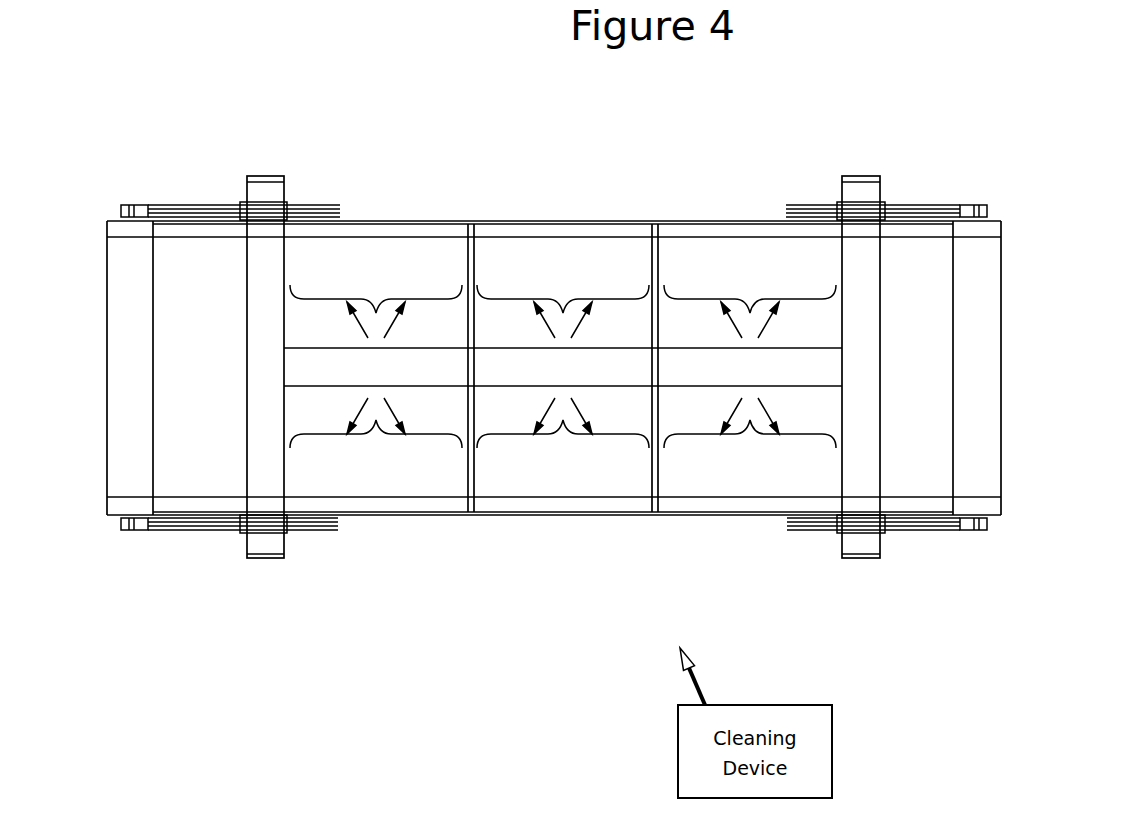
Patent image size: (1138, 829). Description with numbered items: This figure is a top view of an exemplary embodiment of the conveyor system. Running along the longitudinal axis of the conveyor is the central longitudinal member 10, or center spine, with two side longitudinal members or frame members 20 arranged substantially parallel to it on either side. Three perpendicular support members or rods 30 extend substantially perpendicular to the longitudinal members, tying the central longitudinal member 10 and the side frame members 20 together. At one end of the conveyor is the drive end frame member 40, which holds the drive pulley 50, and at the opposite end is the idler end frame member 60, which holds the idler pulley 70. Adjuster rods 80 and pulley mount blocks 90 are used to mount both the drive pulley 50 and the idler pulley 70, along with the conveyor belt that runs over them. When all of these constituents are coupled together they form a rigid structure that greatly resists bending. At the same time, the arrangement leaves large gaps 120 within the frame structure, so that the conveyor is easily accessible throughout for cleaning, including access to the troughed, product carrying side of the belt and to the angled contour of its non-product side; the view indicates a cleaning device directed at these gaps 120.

The central longitudinal member 10 is at (563, 265).
The side longitudinal frame member 20 is at (554, 369).
The perpendicular support rod 30 is at (533, 367).
The drive end frame member 40 is at (841, 333).
The drive pulley 50 is at (1040, 442).
The idler end frame member 60 is at (243, 331).
The idler pulley 70 is at (100, 293).
The adjuster rod 80 is at (551, 438).
The pulley mount block 90 is at (546, 441).
The gap 120 is at (563, 366).